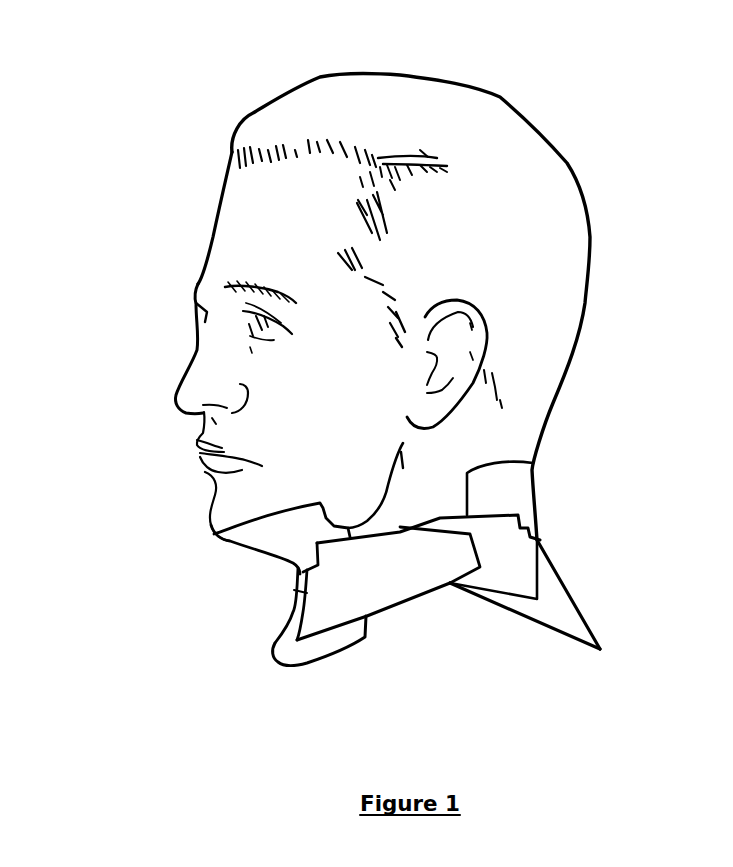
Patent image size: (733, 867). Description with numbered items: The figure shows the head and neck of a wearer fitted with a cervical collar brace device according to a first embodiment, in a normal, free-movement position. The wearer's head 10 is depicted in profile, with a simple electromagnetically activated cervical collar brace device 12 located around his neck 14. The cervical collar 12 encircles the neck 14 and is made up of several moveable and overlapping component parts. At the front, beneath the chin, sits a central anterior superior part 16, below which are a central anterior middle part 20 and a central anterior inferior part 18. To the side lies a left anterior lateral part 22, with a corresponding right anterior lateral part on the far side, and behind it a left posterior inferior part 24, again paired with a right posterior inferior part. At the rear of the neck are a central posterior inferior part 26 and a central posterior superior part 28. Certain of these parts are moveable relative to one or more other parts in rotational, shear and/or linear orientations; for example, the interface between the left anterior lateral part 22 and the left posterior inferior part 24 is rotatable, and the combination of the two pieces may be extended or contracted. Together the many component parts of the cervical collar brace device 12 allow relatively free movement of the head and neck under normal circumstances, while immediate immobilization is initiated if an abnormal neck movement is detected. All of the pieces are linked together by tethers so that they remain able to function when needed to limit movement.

The wearer's head 10 is at (382, 307).
The cervical collar brace device 12 is at (635, 477).
The neck 14 is at (468, 672).
The central anterior superior part 16 is at (254, 542).
The central anterior inferior part 18 is at (305, 657).
The central anterior middle part 20 is at (295, 587).
The left anterior lateral part 22 is at (388, 583).
The left posterior inferior part 24 is at (487, 572).
The central posterior inferior part 26 is at (520, 487).
The central posterior superior part 28 is at (573, 617).